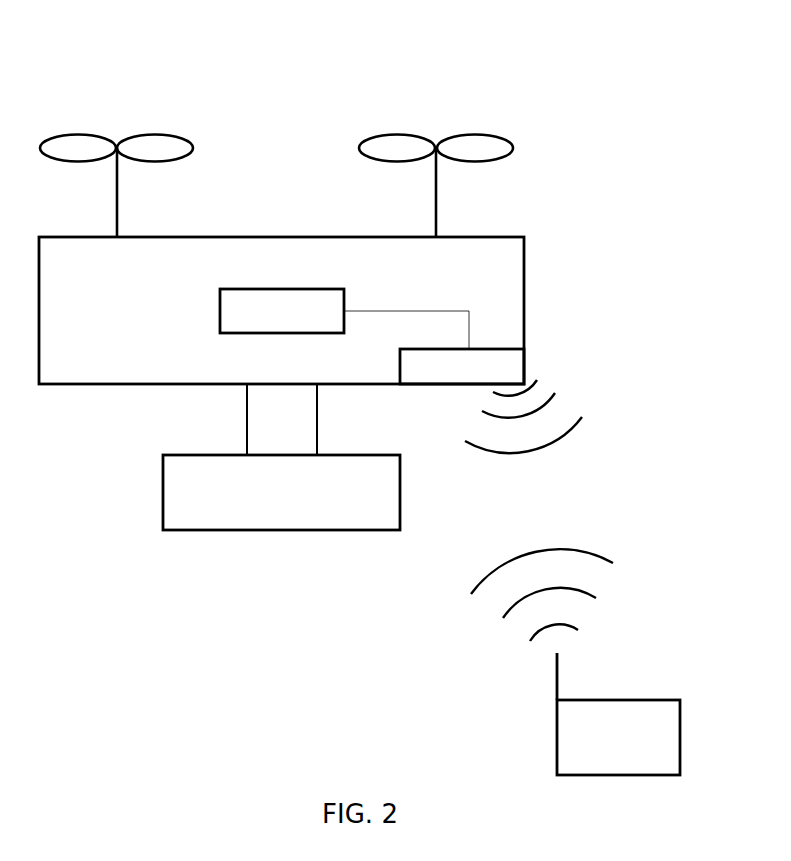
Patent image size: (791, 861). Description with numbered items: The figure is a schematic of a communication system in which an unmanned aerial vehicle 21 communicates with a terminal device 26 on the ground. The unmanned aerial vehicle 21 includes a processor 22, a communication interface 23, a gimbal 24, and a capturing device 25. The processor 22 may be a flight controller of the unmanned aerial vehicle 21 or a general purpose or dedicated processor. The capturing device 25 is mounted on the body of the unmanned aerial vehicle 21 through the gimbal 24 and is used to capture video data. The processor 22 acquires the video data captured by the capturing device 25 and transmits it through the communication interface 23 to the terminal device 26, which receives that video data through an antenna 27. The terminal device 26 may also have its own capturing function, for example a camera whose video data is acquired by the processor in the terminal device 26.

The unmanned aerial vehicle 21 is at (355, 36).
The processor 22 is at (344, 319).
The communication interface 23 is at (491, 401).
The gimbal 24 is at (282, 419).
The capturing device 25 is at (281, 492).
The terminal device 26 is at (618, 737).
The antenna 27 is at (535, 682).